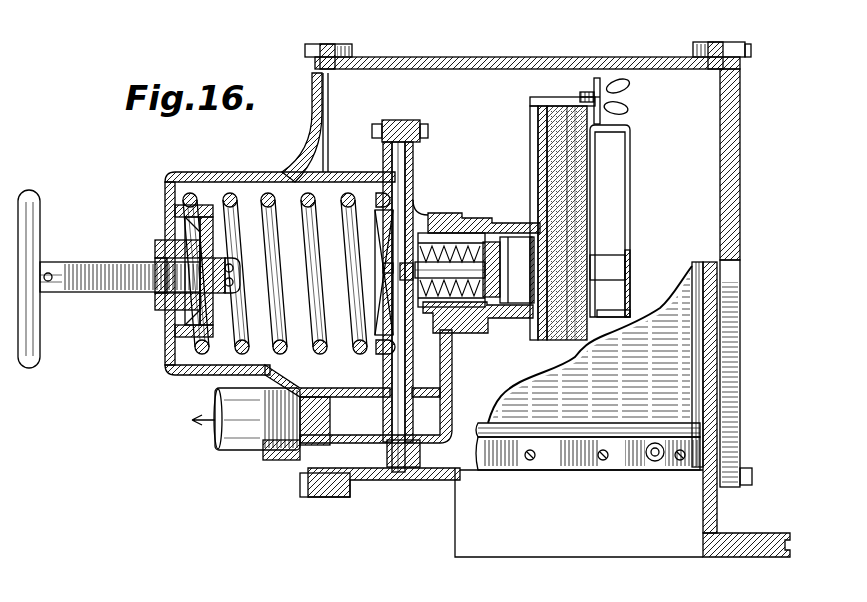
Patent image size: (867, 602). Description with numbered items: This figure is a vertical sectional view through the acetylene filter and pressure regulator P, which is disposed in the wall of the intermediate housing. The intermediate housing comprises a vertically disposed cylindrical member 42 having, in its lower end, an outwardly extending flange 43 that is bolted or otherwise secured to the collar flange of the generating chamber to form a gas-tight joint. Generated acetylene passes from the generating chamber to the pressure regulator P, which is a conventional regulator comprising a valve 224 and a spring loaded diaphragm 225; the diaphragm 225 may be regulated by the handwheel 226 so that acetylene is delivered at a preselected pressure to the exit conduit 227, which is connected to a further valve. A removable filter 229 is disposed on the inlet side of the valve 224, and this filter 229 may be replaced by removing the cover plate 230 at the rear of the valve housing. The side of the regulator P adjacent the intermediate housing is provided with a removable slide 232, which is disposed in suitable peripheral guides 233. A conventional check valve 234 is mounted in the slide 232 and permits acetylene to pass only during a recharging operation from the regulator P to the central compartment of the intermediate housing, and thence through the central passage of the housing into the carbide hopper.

The pressure regulator P is at (292, 148).
The valve 224 is at (505, 233).
The spring loaded diaphragm 225 is at (409, 155).
The handwheel 226 is at (28, 222).
The exit conduit 227 is at (243, 437).
The removable filter 229 is at (537, 142).
The cover plate 230 is at (729, 186).
The removable slide 232 is at (663, 314).
The peripheral guides 233 is at (695, 365).
The check valve 234 is at (654, 461).
The cylindrical member 42 is at (708, 498).
The outwardly extending flange 43 is at (750, 547).